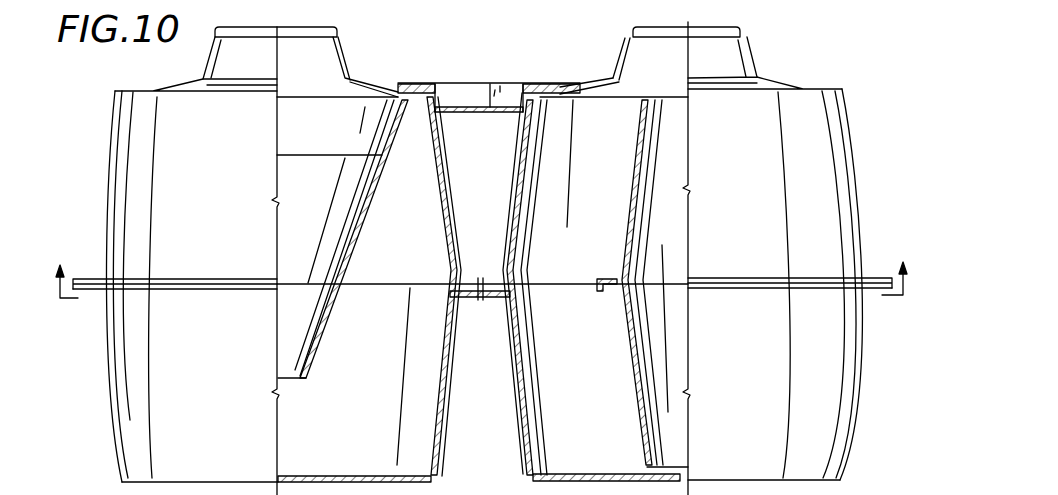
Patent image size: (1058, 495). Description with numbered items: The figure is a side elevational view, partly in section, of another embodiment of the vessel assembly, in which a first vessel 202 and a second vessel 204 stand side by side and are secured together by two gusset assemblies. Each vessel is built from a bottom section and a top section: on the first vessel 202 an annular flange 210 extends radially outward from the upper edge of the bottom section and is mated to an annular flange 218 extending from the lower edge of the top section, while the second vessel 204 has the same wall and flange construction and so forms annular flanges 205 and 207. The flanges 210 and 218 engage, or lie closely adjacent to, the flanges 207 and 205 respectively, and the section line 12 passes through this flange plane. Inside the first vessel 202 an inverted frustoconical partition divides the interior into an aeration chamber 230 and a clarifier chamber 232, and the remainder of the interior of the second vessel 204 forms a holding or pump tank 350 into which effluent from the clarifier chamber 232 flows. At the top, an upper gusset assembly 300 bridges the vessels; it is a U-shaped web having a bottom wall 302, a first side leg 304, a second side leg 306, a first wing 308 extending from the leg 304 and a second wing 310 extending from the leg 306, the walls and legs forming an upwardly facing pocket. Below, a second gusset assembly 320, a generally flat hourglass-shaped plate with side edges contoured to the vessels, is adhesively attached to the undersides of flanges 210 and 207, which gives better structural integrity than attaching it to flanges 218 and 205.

The section line 12 is at (483, 266).
The first vessel 202 is at (93, 398).
The second vessel 204 is at (867, 182).
The annular flange 205 is at (743, 278).
The annular flange 207 is at (763, 290).
The annular flange 210 is at (205, 290).
The annular flange 218 is at (188, 278).
The aeration chamber 230 is at (388, 355).
The clarifier chamber 232 is at (332, 188).
The upper gusset assembly 300 is at (491, 84).
The bottom wall 302 is at (486, 113).
The first side leg 304 is at (435, 83).
The second side leg 306 is at (528, 90).
The first wing 308 is at (413, 84).
The second wing 310 is at (558, 83).
The second gusset assembly 320 is at (482, 300).
The holding or pump tank 350 is at (622, 187).